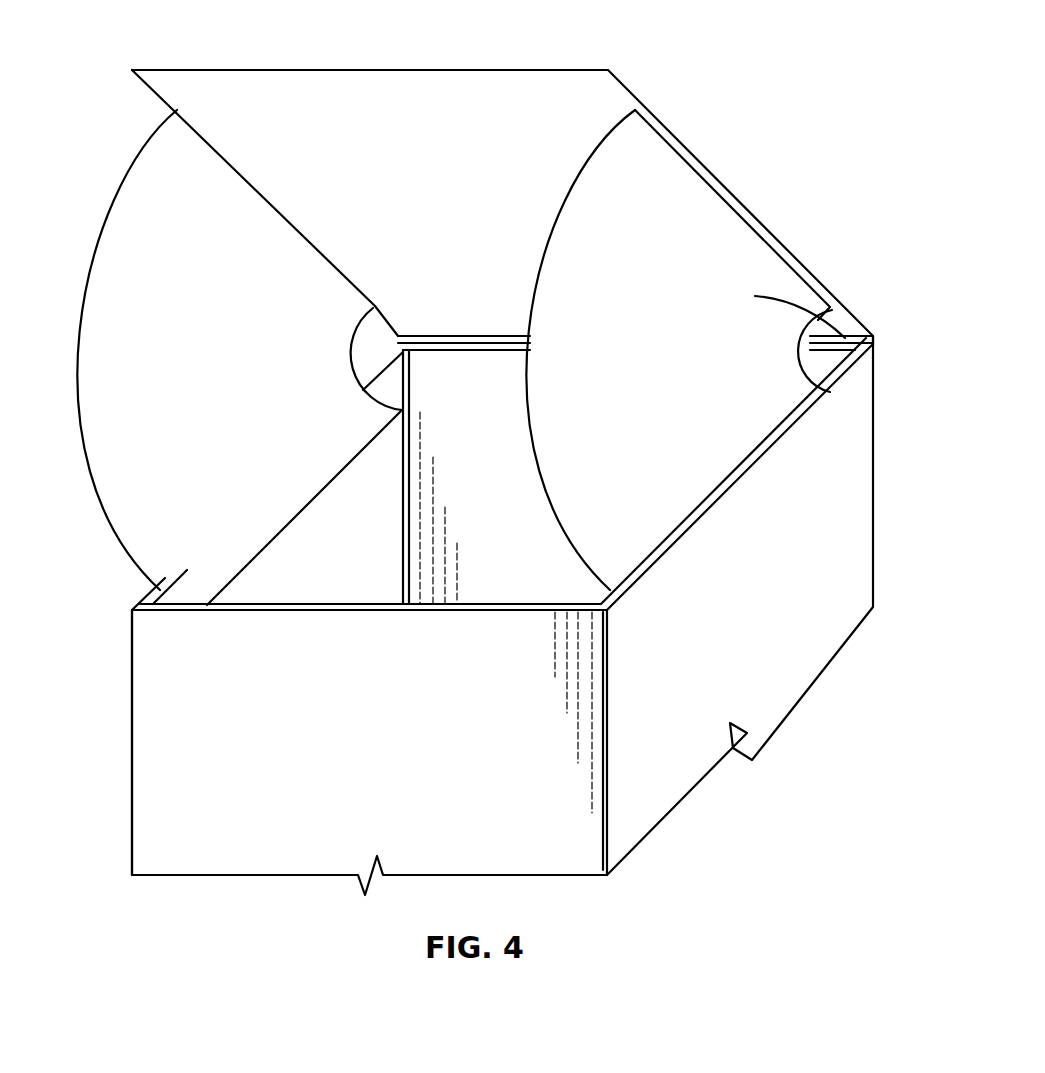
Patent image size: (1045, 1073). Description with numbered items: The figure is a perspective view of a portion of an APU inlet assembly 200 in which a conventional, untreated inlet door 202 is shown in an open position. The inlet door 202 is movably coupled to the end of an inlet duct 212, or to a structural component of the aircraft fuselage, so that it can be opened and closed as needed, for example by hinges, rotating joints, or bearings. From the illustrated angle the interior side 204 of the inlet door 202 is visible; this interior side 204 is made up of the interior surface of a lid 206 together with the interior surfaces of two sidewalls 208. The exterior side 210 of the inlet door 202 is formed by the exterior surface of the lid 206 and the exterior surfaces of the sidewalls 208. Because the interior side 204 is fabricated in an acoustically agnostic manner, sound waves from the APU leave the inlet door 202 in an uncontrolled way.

The APU inlet assembly 200 is at (826, 681).
The inlet door 202 is at (667, 116).
The interior side 204 is at (354, 180).
The lid 206 is at (542, 72).
The sidewalls 208 is at (105, 177).
The exterior side 210 is at (754, 386).
The inlet duct 212 is at (130, 682).